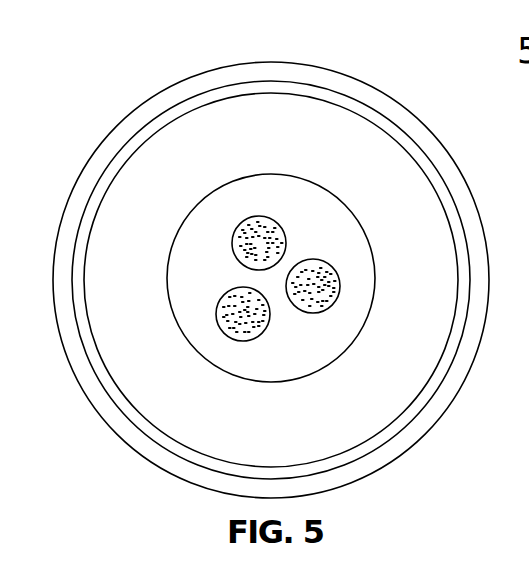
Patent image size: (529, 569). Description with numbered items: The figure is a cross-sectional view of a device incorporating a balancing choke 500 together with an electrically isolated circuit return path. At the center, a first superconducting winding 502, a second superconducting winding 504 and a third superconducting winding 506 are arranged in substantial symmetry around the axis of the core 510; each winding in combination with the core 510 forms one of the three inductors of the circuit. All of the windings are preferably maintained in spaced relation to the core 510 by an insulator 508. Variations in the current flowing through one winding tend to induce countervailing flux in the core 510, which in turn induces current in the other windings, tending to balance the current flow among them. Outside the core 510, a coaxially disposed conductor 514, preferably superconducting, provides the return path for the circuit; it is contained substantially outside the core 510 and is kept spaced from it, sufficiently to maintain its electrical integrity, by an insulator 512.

The balancing choke 500 is at (353, 102).
The first superconducting winding 502 is at (338, 280).
The second superconducting winding 504 is at (218, 315).
The third superconducting winding 506 is at (245, 218).
The insulator 508 is at (273, 367).
The core 510 is at (398, 375).
The insulator 512 is at (150, 130).
The coaxially disposed conductor 514 is at (188, 87).